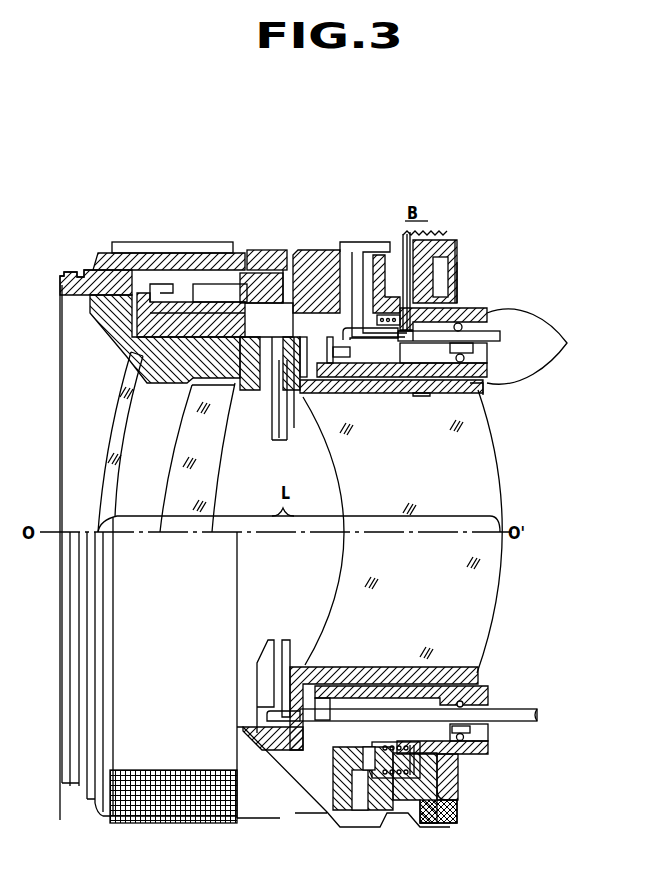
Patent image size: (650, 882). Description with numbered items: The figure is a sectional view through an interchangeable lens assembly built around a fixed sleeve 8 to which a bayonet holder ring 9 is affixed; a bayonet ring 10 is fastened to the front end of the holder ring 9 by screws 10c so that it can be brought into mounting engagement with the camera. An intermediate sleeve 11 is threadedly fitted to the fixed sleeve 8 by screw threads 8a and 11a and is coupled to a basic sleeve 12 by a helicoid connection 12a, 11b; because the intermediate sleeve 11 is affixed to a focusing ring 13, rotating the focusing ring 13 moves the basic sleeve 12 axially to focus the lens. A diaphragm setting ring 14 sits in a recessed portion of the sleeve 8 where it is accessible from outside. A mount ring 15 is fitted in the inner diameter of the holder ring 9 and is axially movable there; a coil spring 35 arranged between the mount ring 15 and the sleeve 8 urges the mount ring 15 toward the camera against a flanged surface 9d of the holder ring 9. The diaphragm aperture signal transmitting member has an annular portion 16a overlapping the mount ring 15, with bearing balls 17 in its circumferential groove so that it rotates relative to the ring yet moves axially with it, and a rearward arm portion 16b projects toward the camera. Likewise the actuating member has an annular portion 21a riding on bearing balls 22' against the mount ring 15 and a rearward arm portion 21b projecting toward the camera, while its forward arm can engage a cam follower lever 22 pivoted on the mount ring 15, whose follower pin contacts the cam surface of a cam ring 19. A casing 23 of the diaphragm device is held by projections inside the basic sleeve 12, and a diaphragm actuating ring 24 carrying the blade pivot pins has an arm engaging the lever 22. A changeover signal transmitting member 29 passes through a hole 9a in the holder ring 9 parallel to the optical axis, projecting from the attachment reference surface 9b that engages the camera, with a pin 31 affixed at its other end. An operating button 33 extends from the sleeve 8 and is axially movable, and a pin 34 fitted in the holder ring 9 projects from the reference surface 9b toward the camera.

The fixed sleeve 8 is at (323, 270).
The screw thread 8a is at (295, 265).
The bayonet holder ring 9 is at (440, 245).
The hole 9a is at (458, 806).
The attachment reference surface 9b is at (455, 262).
The flanged surface 9d is at (470, 736).
The bayonet ring 10 is at (452, 797).
The screws 10c is at (434, 823).
The intermediate sleeve 11 is at (213, 300).
The screw thread 11a is at (283, 275).
The helicoid connection 11b is at (262, 282).
The basic sleeve 12 is at (238, 318).
The helicoid connection 12a is at (180, 300).
The focusing ring 13 is at (113, 245).
The diaphragm setting ring 14 is at (358, 810).
The mount ring 15 is at (539, 346).
The annular portion 16a is at (478, 716).
The arm portion 16b is at (503, 336).
The bearing balls 17 is at (460, 322).
The cam ring 19 is at (422, 396).
The annular portion 21a is at (483, 352).
The arm portion 21b is at (540, 714).
The cam follower lever 22 is at (349, 339).
The bearing balls 22' is at (417, 702).
The casing 23 is at (262, 735).
The diaphragm actuating ring 24 is at (287, 735).
The changeover signal transmitting member 29 is at (446, 766).
The pin 31 is at (378, 795).
The operating button 33 is at (403, 242).
The pin 34 is at (458, 300).
The spring 35 is at (384, 324).